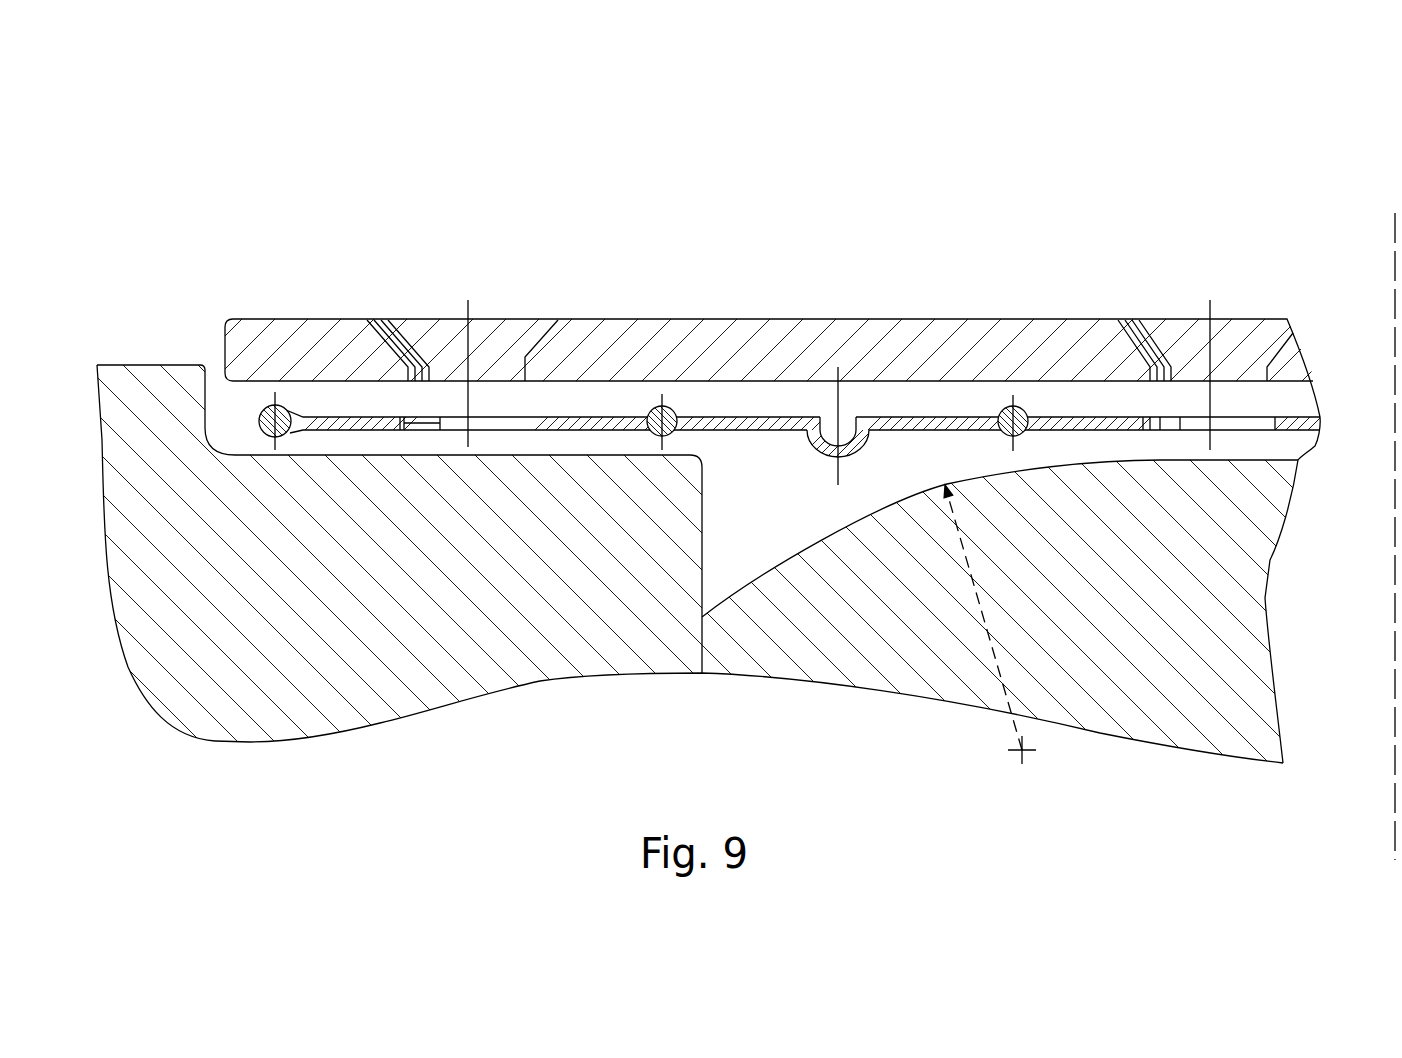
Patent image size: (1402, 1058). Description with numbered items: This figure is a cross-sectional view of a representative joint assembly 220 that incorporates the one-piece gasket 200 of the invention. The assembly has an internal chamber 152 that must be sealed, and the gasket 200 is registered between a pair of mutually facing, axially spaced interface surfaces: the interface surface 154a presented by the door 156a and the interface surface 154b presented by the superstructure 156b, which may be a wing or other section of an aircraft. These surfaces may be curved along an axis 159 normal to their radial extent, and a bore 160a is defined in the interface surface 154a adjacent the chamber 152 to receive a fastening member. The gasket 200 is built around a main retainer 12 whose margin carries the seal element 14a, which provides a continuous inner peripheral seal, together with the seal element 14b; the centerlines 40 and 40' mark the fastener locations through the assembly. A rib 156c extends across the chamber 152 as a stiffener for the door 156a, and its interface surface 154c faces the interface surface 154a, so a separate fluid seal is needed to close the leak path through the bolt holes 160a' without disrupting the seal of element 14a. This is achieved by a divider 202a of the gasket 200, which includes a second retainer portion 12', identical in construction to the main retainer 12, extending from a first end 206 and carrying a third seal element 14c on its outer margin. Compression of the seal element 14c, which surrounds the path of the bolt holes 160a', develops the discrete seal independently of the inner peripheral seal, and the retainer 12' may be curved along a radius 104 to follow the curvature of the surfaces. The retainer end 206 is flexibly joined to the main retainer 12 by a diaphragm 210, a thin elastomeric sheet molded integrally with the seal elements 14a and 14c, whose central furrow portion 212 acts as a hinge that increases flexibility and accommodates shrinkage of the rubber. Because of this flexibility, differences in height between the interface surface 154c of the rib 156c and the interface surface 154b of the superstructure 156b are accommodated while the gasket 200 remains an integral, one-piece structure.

The main retainer 12 is at (497, 342).
The second retainer portion 12' is at (1156, 336).
The seal element 14a is at (640, 416).
The fastener 14b is at (358, 416).
The third seal element 14c is at (1025, 412).
The axis 40 is at (479, 346).
The axis 40' is at (1227, 360).
The radius 104 is at (990, 650).
The internal chamber 152 is at (755, 530).
The interface surface 154a is at (690, 397).
The interface surface 154b is at (680, 447).
The interface surface 154c is at (781, 558).
The door 156a is at (225, 340).
The superstructure 156b is at (98, 395).
The rib 156c is at (1265, 598).
The axis 159 is at (1395, 842).
The bore 160a is at (534, 296).
The bolt holes 160a' is at (1299, 313).
The gasket 200 is at (288, 443).
The divider 202a is at (1334, 424).
The first end 206 is at (1088, 418).
The diaphragm 210 is at (752, 417).
The central furrow portion 212 is at (856, 425).
The joint assembly 220 is at (1157, 145).